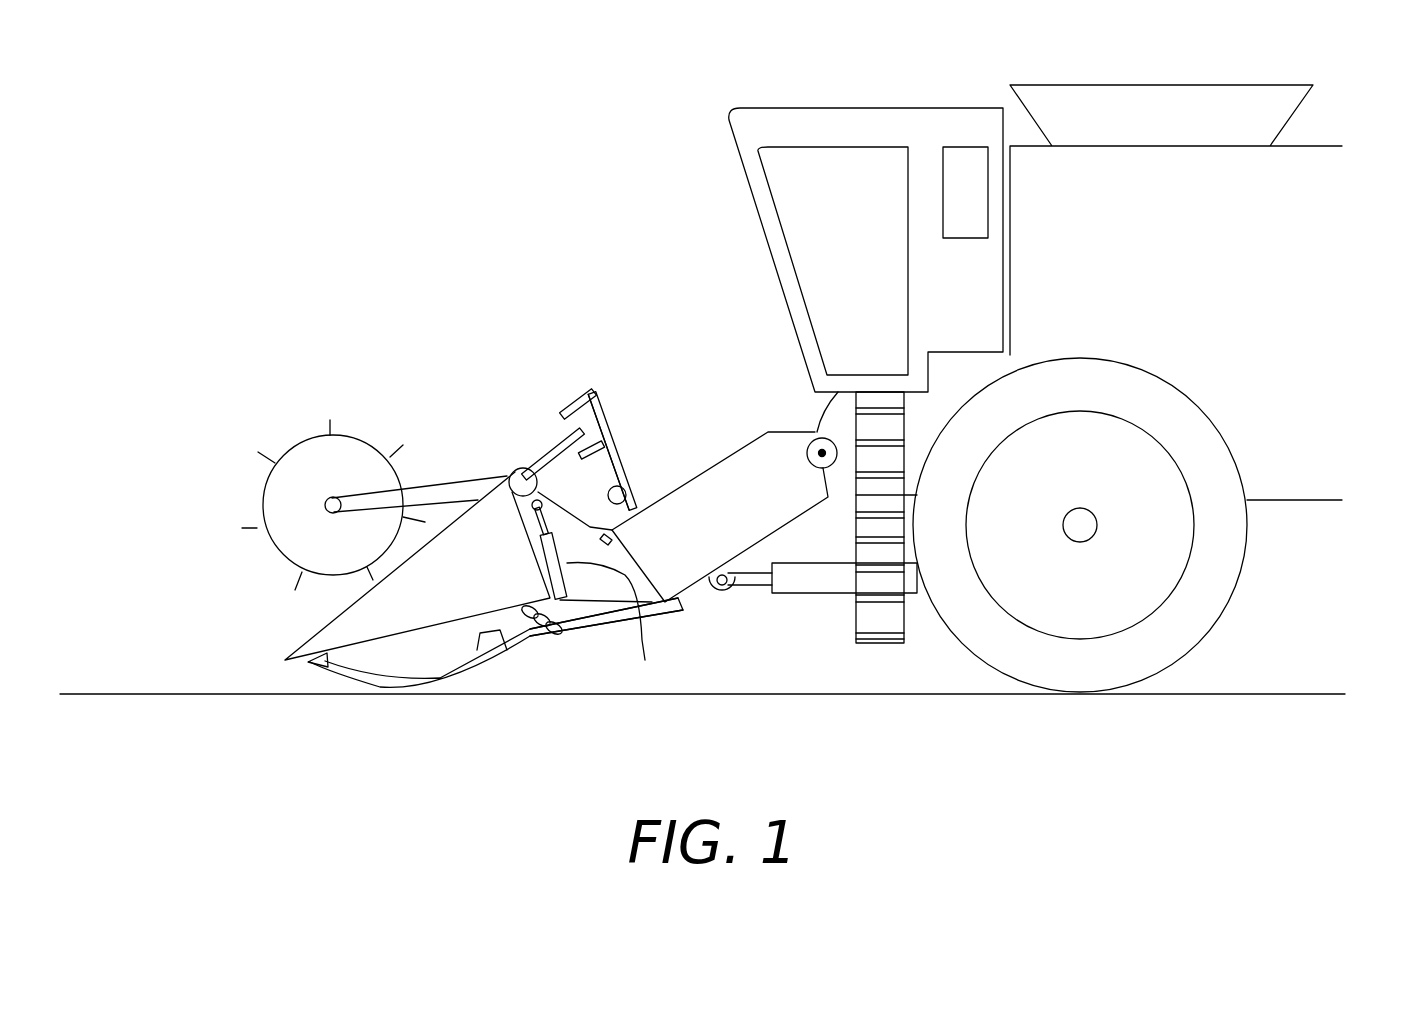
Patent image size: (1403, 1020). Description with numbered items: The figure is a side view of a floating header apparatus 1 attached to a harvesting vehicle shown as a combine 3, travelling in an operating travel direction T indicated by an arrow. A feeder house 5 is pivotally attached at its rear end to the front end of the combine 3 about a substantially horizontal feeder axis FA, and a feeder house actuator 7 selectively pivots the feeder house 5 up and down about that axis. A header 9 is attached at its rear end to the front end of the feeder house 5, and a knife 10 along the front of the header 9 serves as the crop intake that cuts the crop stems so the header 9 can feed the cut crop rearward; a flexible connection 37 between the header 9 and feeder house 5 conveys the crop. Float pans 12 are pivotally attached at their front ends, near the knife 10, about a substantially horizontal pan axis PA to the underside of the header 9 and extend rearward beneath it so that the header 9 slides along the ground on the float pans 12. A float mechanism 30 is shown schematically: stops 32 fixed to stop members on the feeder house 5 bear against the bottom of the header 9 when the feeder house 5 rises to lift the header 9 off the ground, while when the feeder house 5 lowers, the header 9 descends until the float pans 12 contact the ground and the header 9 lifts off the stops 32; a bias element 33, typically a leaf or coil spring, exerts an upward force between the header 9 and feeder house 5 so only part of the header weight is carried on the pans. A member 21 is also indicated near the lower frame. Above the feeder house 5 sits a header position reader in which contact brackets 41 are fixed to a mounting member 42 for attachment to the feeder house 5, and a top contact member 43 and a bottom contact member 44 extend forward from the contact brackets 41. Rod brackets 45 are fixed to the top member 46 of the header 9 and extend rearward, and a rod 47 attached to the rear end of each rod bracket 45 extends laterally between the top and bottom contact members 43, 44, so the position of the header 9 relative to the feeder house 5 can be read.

The floating header apparatus 1 is at (414, 399).
The combine 3 is at (848, 108).
The feeder house 5 is at (720, 458).
The feeder house actuator 7 is at (818, 596).
The header 9 is at (365, 590).
The knife 10 is at (306, 668).
The float pans 12 is at (437, 688).
The frame bar 21 is at (650, 615).
The float mechanism 30 is at (548, 668).
The stops 32 is at (477, 650).
The bias element 33 is at (603, 583).
The flexible connection 37 is at (603, 583).
The contact brackets 41 is at (622, 455).
The mounting member 42 is at (620, 477).
The top contact member 43 is at (590, 394).
The bottom contact member 44 is at (616, 448).
The rod brackets 45 is at (553, 462).
The top member 46 is at (512, 475).
The rod 47 is at (578, 428).
The feeder axis FA is at (820, 452).
The pan axis PA is at (310, 670).
The operating travel direction T is at (467, 120).